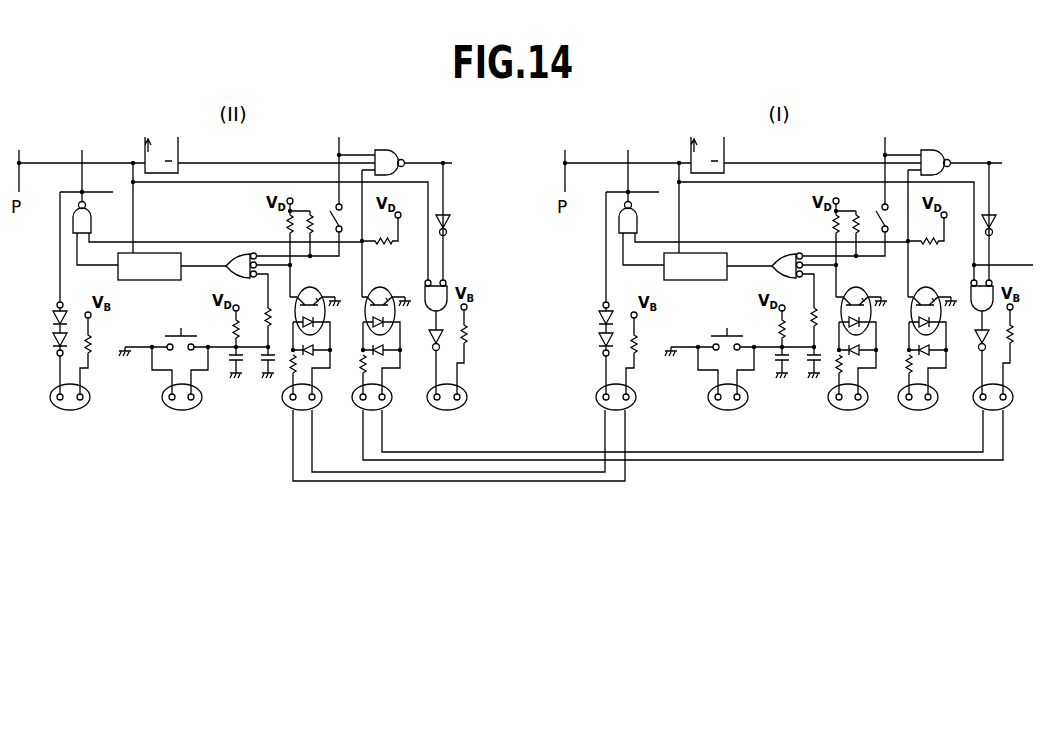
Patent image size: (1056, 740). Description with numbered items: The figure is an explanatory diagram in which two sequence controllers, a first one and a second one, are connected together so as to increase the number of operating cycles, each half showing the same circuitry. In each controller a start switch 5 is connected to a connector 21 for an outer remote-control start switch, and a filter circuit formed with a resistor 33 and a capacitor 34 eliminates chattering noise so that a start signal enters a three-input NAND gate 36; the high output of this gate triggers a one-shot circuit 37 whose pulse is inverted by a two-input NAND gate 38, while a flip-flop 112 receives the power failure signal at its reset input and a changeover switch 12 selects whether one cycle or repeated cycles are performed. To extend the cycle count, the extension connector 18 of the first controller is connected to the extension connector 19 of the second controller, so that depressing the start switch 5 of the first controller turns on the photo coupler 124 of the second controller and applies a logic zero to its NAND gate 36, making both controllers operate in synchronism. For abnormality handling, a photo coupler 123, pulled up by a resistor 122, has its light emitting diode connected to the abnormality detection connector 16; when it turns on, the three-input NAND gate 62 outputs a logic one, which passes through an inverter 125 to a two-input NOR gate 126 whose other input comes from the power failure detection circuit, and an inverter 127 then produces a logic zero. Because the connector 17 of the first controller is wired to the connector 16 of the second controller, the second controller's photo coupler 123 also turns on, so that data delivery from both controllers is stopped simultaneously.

The flip-flop 112 is at (516, 155).
The 2-input NAND gate 38 is at (490, 234).
The one-shot circuit 37 is at (445, 266).
The 3-input NAND gate 36 is at (545, 270).
The changeover switch 12 is at (625, 184).
The 3-input NAND gate 62 is at (682, 214).
The inverter 125 is at (734, 221).
The resistor 122 is at (654, 230).
The photo coupler 124 is at (588, 329).
The photo coupler 123 is at (658, 329).
The 2-input NOR gate 126 is at (425, 301).
The inverter 127 is at (430, 339).
The abnormality detection connector 17 is at (720, 408).
The abnormality detection connector 16 is at (638, 408).
The extension connector 19 is at (567, 408).
The extension connector 18 is at (343, 367).
The start switch 5 is at (466, 353).
The connector 21 is at (442, 397).
The resistor 33 is at (495, 333).
The capacitor 34 is at (525, 343).